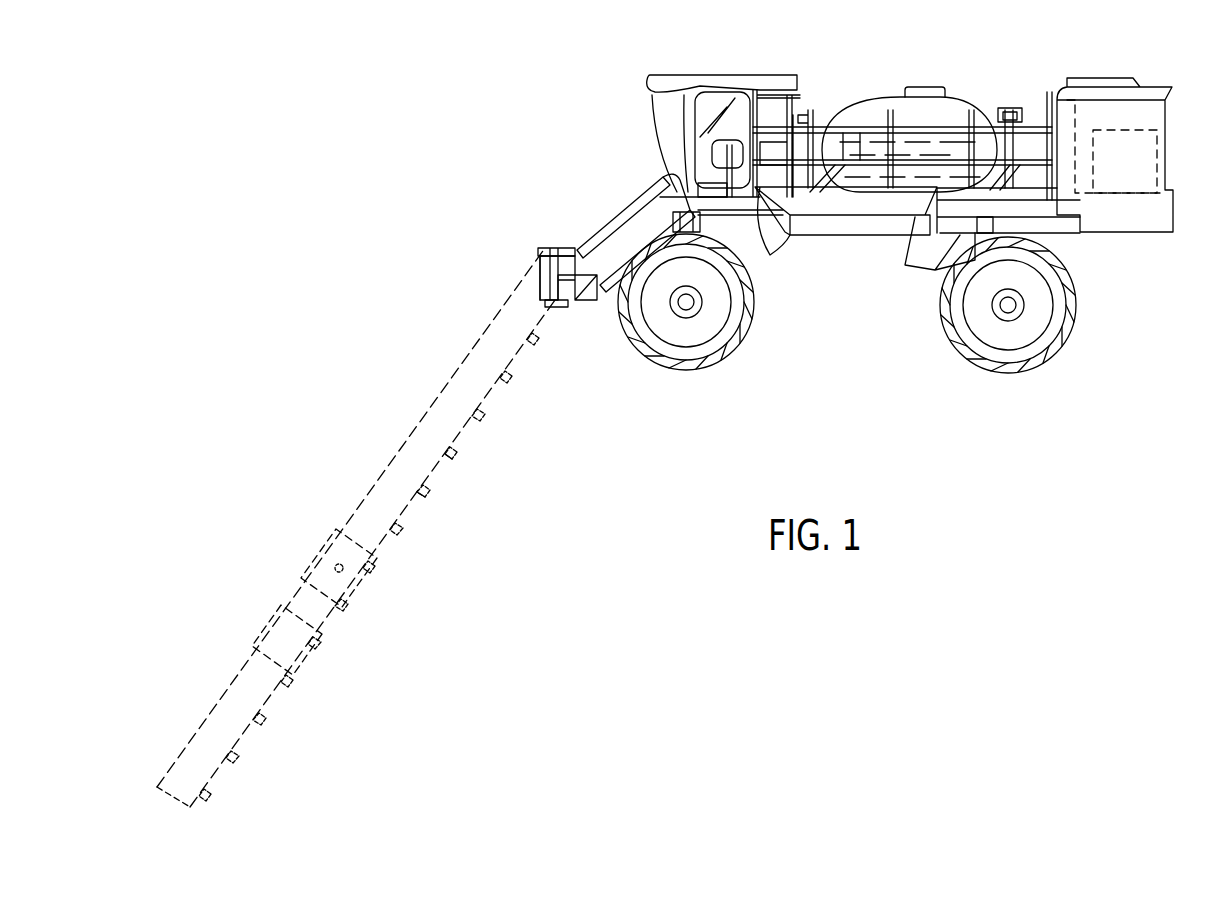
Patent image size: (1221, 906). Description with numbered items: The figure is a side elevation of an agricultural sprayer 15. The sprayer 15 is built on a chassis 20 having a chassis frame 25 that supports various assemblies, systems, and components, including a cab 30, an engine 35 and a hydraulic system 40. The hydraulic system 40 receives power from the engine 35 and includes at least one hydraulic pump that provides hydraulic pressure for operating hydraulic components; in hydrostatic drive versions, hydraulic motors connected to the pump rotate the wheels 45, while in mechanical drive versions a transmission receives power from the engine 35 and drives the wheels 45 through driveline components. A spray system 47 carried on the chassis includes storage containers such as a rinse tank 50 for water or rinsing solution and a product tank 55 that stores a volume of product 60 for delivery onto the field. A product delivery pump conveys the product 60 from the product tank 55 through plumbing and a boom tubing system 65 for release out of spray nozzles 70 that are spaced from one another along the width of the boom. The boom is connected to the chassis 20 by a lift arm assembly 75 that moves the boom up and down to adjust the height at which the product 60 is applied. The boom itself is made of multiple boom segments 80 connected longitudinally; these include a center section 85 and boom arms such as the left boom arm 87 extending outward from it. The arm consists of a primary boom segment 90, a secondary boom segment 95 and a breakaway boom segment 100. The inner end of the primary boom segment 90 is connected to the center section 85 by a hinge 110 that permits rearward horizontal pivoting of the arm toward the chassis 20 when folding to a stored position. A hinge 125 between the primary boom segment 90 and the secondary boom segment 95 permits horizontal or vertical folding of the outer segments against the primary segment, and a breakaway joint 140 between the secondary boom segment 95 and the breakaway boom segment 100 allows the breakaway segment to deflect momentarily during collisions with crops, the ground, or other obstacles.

The sprayer 15 is at (910, 52).
The chassis 20 is at (862, 242).
The chassis frame 25 is at (922, 265).
The cab 30 is at (720, 75).
The engine 35 is at (1135, 145).
The hydraulic system 40 is at (1078, 170).
The wheels 45 is at (715, 360).
The spray system 47 is at (975, 90).
The rinse tank 50 is at (1020, 110).
The product tank 55 is at (880, 90).
The product 60 is at (850, 145).
The boom tubing system 65 is at (485, 415).
The spray nozzles 70 is at (430, 490).
The lift arm assembly 75 is at (660, 195).
The boom segments 80 is at (378, 380).
The center section 85 is at (552, 228).
The left boom arm 87 is at (520, 545).
The primary boom segment 90 is at (430, 378).
The secondary boom segment 95 is at (305, 560).
The breakaway boom segment 100 is at (225, 690).
The hinge 110 is at (545, 285).
The hinge 125 is at (365, 590).
The breakaway joint 140 is at (305, 665).